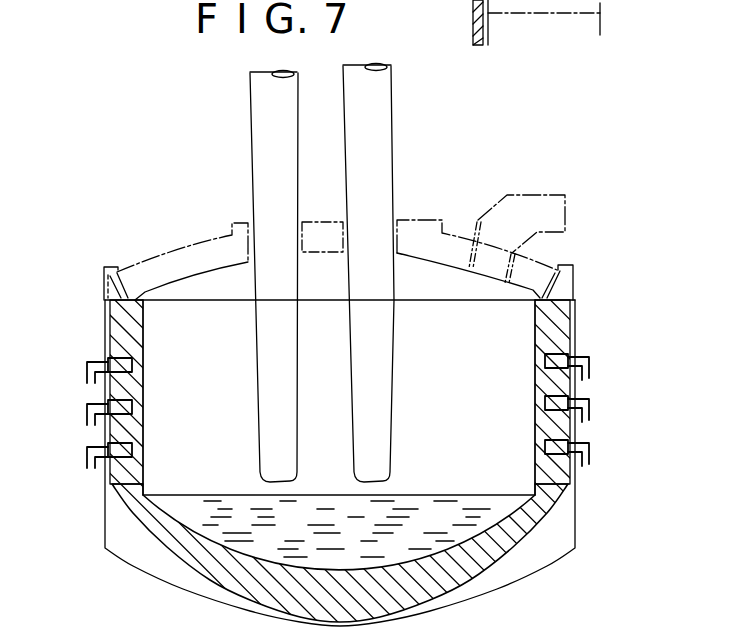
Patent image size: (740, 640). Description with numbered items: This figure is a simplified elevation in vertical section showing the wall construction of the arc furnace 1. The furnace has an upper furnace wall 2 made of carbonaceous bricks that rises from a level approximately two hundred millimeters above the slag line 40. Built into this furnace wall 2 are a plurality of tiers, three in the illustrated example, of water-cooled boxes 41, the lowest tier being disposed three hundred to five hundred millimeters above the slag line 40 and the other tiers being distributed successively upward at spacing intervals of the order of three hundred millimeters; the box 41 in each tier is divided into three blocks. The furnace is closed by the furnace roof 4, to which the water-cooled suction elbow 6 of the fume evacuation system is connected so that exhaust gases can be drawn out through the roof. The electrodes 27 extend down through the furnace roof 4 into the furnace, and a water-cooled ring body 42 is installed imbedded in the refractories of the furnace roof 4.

The arc furnace 1 is at (99, 331).
The furnace wall 2 is at (574, 322).
The furnace roof 4 is at (188, 251).
The water-cooled suction elbow 6 is at (501, 200).
The electrodes 27 is at (250, 113).
The slag line 40 is at (440, 492).
The water-cooled boxes 41 is at (132, 406).
The water-cooled ring body 42 is at (470, 252).